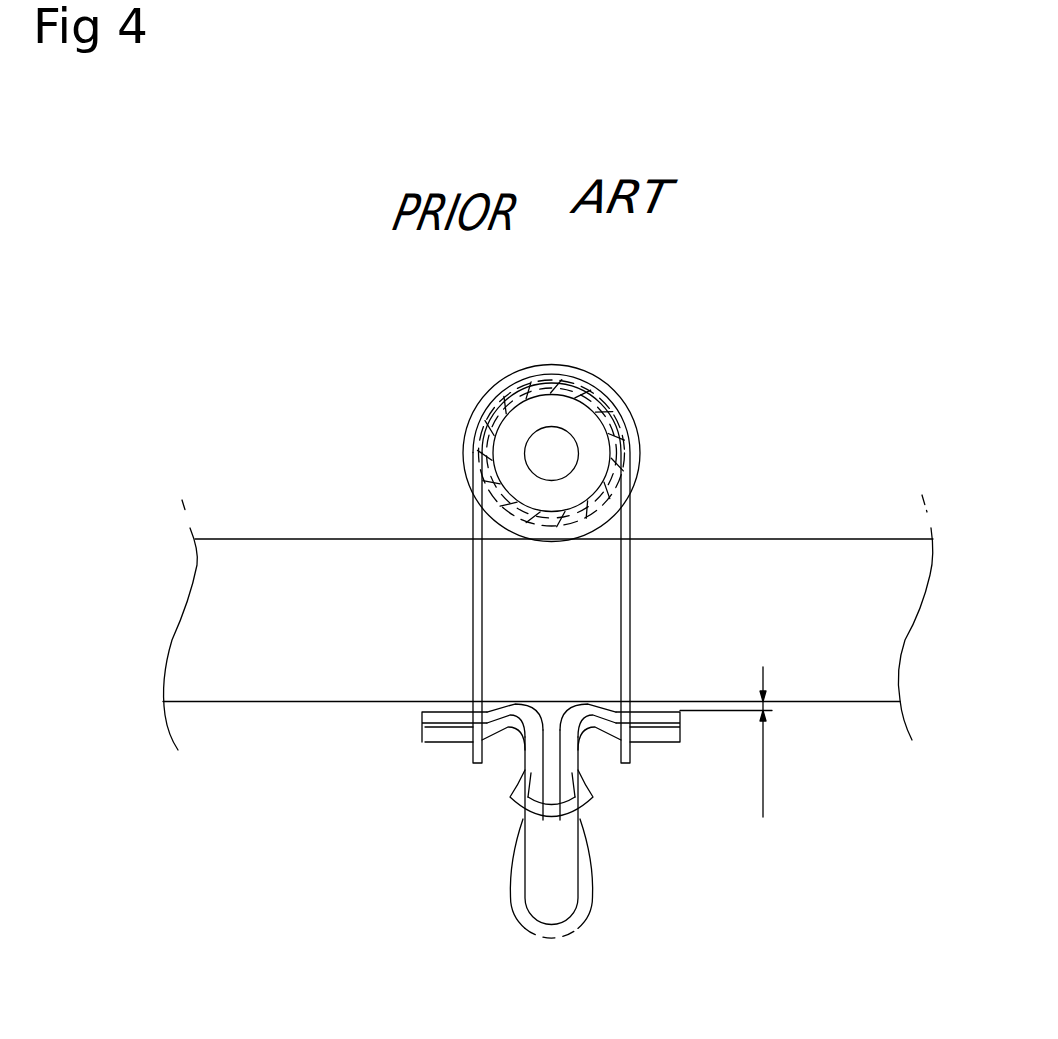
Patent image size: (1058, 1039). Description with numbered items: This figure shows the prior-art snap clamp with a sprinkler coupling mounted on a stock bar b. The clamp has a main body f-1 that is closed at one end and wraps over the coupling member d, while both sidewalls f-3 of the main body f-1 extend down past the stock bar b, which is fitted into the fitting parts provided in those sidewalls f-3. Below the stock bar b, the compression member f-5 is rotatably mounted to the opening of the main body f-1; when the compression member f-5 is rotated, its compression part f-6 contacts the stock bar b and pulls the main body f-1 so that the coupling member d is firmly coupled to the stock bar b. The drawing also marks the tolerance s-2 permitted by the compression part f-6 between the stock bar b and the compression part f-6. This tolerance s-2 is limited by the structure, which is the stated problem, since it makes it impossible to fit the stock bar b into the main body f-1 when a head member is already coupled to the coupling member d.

The stock bar b is at (822, 553).
The coupling member d is at (600, 452).
The main body f-1 is at (467, 517).
The sidewalls f-3 is at (473, 623).
The compression member f-5 is at (510, 797).
The compression part f-6 is at (583, 701).
The tolerance s-2 is at (726, 742).